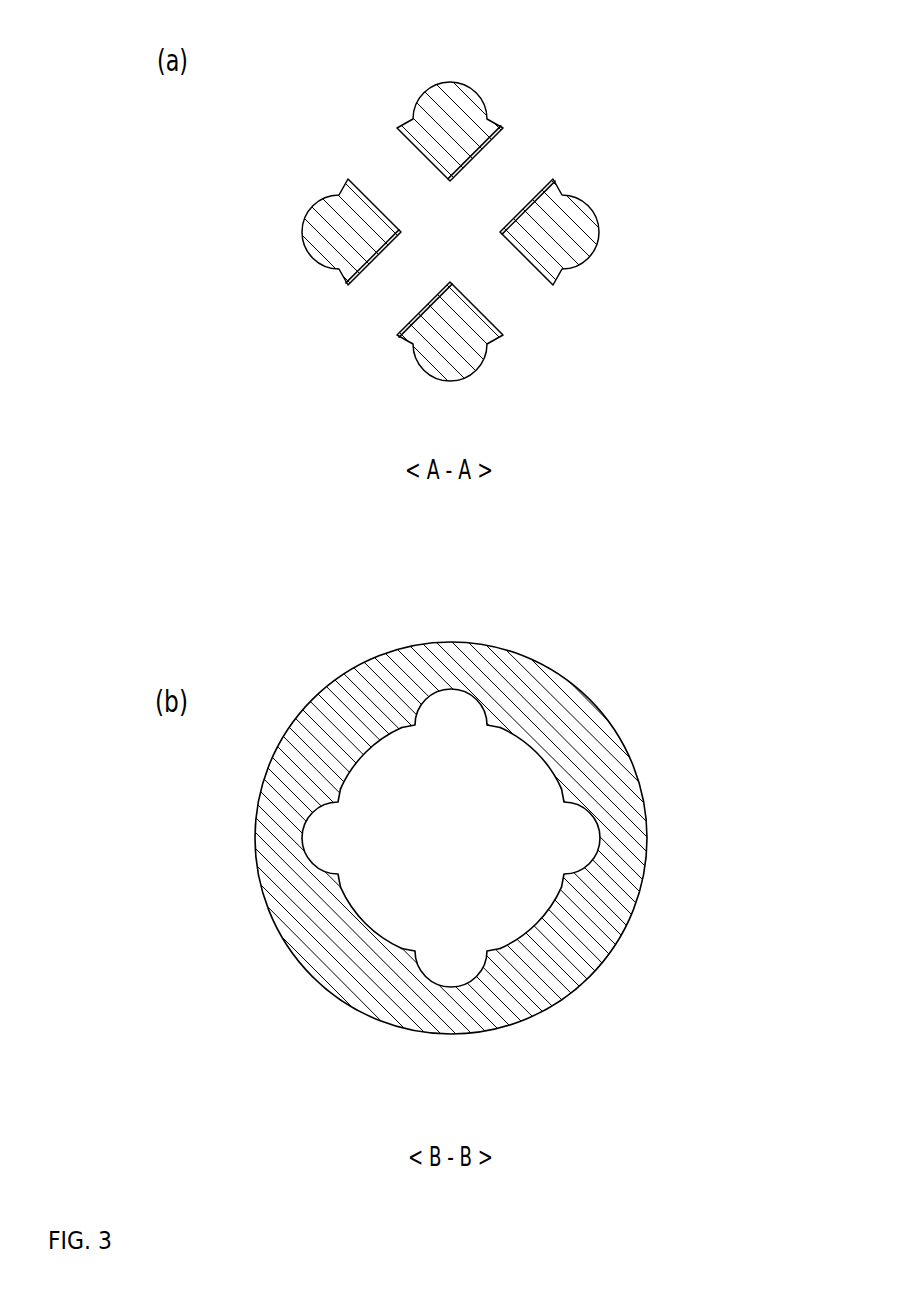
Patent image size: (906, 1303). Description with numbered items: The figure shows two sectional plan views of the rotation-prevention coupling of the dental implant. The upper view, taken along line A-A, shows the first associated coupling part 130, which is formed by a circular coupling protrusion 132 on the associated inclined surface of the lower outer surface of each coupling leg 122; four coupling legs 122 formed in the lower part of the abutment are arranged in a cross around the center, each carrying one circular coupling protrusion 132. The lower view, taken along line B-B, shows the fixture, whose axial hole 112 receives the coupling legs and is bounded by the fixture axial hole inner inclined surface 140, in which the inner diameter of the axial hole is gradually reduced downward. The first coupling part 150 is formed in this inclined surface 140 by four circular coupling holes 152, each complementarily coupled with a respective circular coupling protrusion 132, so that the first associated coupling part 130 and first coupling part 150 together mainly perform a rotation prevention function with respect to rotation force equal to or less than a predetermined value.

The first associated coupling part 130 is at (401, 68).
The circular coupling protrusion 132 is at (448, 90).
The coupling leg 122 is at (513, 248).
The fixture axial hole inner inclined surface 140 is at (555, 682).
The axial hole 112 is at (468, 816).
The first coupling part 150 is at (449, 838).
The circular coupling hole 152 is at (455, 686).